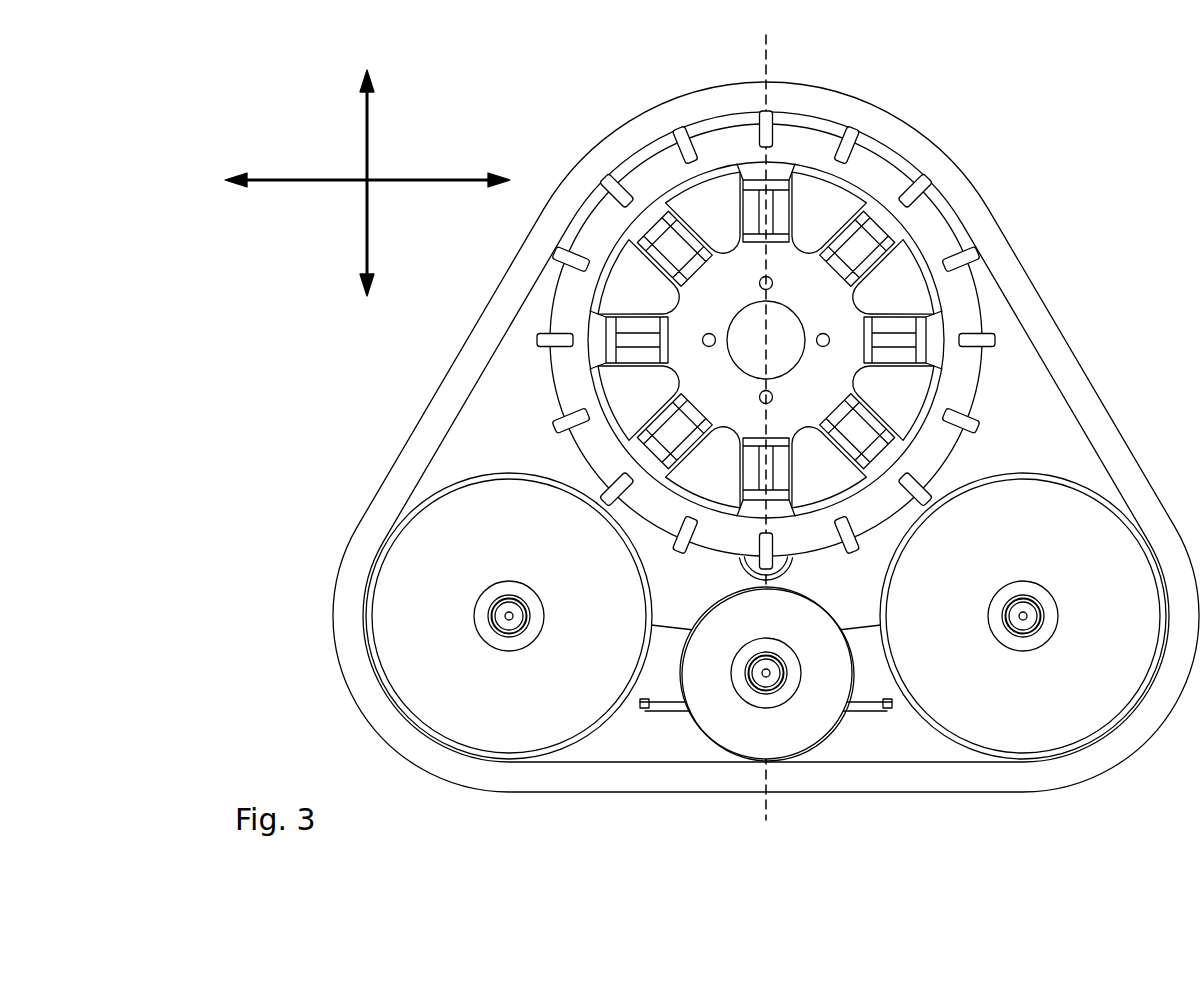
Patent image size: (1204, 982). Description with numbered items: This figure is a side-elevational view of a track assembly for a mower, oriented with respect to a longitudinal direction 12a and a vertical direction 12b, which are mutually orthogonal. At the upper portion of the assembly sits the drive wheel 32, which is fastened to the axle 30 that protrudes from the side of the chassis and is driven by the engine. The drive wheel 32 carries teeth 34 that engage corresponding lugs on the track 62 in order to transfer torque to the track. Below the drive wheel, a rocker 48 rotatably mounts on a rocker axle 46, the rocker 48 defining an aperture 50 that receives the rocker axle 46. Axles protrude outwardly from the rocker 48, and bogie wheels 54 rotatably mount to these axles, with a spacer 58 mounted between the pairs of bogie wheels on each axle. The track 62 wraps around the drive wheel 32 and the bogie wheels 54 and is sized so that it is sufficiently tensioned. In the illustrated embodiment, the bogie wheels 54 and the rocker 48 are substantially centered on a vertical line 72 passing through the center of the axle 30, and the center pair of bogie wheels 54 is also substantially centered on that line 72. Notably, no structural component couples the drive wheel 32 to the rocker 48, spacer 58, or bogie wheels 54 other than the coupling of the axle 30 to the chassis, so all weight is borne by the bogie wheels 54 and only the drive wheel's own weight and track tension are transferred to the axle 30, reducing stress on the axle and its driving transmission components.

The longitudinal direction 12a is at (415, 178).
The vertical direction 12b is at (364, 136).
The axle 30 is at (750, 340).
The drive wheel 32 is at (706, 304).
The teeth 34 is at (557, 425).
The rocker axle 46 is at (791, 560).
The rocker 48 is at (839, 596).
The aperture 50 is at (740, 560).
The bogie wheels 54 is at (478, 696).
The spacer 58 is at (862, 686).
The track 62 is at (413, 432).
The vertical line 72 is at (763, 68).